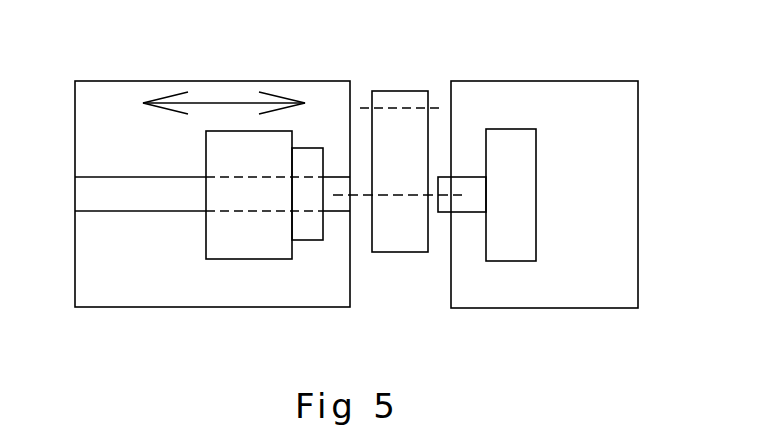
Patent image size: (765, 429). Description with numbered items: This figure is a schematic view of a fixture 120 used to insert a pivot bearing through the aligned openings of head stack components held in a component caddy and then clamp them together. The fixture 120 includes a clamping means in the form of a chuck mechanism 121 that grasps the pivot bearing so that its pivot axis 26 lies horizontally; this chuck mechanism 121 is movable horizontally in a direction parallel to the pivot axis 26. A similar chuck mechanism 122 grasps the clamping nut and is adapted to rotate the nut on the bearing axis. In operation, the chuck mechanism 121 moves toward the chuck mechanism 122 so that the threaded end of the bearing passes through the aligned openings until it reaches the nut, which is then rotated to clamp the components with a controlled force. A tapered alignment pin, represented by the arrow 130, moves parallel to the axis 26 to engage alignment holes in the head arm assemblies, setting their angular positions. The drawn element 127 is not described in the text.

The fixture 120 is at (222, 347).
The chuck mechanism 121 is at (308, 148).
The chuck mechanism 122 is at (465, 177).
The intermediate disc member 127 is at (420, 108).
The alignment pin 130 is at (223, 103).
The pivot axis 26 is at (358, 196).